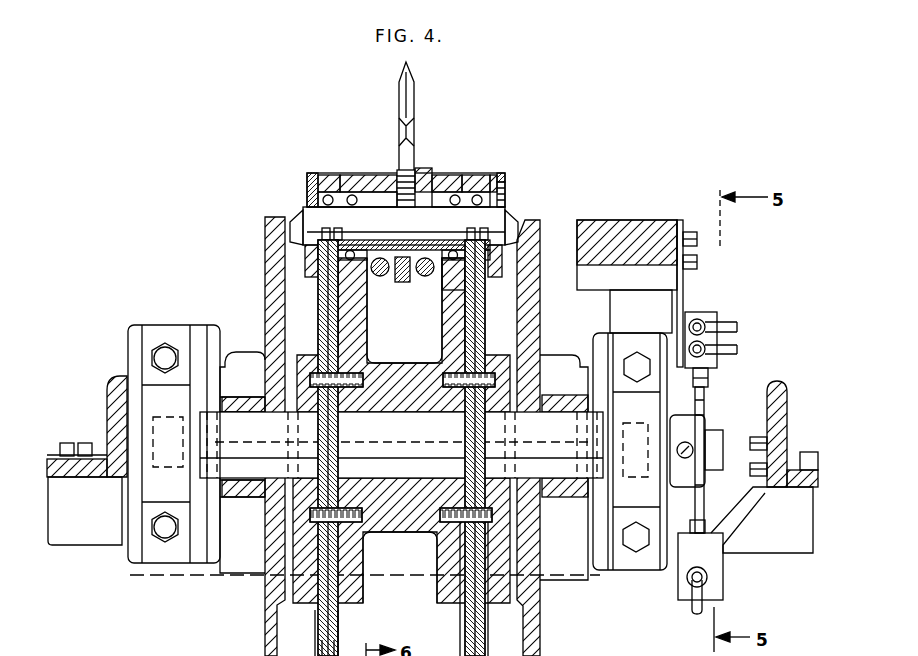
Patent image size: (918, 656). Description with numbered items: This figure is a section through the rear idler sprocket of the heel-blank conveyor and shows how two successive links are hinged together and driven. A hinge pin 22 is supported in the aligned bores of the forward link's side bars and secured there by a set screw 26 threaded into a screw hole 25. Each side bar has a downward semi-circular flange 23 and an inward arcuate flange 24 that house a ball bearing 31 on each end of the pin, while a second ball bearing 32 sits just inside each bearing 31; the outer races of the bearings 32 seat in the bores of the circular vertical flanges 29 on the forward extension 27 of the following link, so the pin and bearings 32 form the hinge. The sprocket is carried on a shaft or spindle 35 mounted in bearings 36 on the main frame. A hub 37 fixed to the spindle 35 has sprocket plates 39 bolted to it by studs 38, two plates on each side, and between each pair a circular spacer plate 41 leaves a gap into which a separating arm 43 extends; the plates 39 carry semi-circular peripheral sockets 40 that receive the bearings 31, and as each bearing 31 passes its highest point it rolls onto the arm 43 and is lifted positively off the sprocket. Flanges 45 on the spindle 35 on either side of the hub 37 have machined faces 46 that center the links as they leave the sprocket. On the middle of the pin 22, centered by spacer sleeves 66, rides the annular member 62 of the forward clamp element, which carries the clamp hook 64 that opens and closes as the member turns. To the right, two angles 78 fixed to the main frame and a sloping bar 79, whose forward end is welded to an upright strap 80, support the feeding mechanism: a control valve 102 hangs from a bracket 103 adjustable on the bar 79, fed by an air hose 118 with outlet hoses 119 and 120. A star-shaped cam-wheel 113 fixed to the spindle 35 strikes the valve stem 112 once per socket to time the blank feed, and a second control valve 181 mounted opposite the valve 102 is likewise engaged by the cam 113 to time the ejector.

The hinge pin 22 is at (497, 222).
The semi-circular flange 23 is at (303, 262).
The arcuate flange 24 is at (482, 176).
The threaded screw hole 25 is at (505, 190).
The set screw 26 is at (318, 173).
The forward extension 27 is at (430, 183).
The circular vertical flanges 29 is at (447, 280).
The ball bearing 31 is at (318, 194).
The ball bearing 32 is at (457, 174).
The shaft or spindle 35 is at (401, 445).
The bearings 36 is at (145, 492).
The hub 37 is at (393, 527).
The studs 38 is at (352, 507).
The sprocket plates 39 is at (319, 616).
The peripheral sockets 40 is at (334, 645).
The circular spacer plate 41 is at (479, 588).
The separating arm 43 is at (322, 285).
The flanges 45 is at (268, 321).
The machined faces 46 is at (290, 247).
The annular member 62 is at (401, 285).
The clamp hook 64 is at (411, 112).
The spacer sleeves 66 is at (375, 177).
The angles 78 is at (107, 404).
The bar 79 is at (631, 226).
The upright strap 80 is at (617, 310).
The control valve 102 is at (701, 313).
The bracket 103 is at (683, 290).
The valve stem 112 is at (709, 380).
The star-shaped cam-wheel 113 is at (704, 416).
The air supply hose 118 is at (729, 323).
The outlet hose 119 is at (737, 331).
The outlet hose 120 is at (737, 352).
The control valve 181 is at (712, 569).